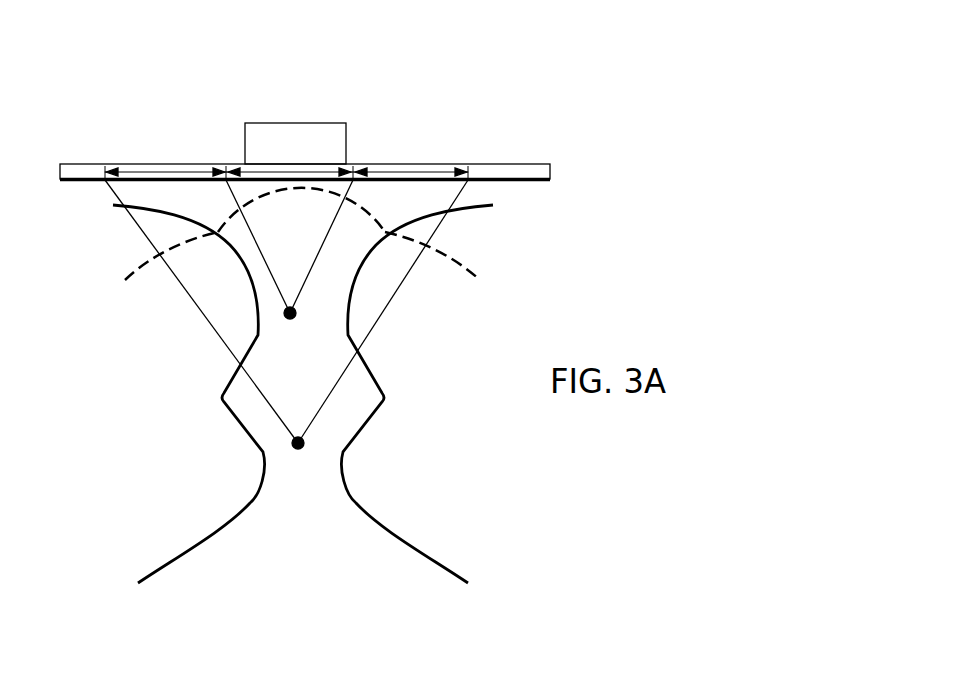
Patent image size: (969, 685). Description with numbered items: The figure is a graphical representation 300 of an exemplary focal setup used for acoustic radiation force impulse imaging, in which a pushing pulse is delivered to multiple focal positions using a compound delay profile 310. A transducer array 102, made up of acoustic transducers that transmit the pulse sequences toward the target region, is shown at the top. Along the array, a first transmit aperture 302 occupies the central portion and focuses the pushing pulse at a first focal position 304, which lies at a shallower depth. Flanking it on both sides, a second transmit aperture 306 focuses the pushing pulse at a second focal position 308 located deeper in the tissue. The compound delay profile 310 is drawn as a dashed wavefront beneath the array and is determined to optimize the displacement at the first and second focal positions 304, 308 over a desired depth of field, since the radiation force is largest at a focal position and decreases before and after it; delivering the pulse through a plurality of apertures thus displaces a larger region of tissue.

The graphical representation 300 is at (562, 60).
The transducer array 102 is at (307, 123).
The first transmit aperture 302 is at (287, 171).
The first focal position 304 is at (284, 313).
The second transmit aperture 306 is at (161, 171).
The second focal position 308 is at (292, 442).
The compound delay profile 310 is at (468, 266).